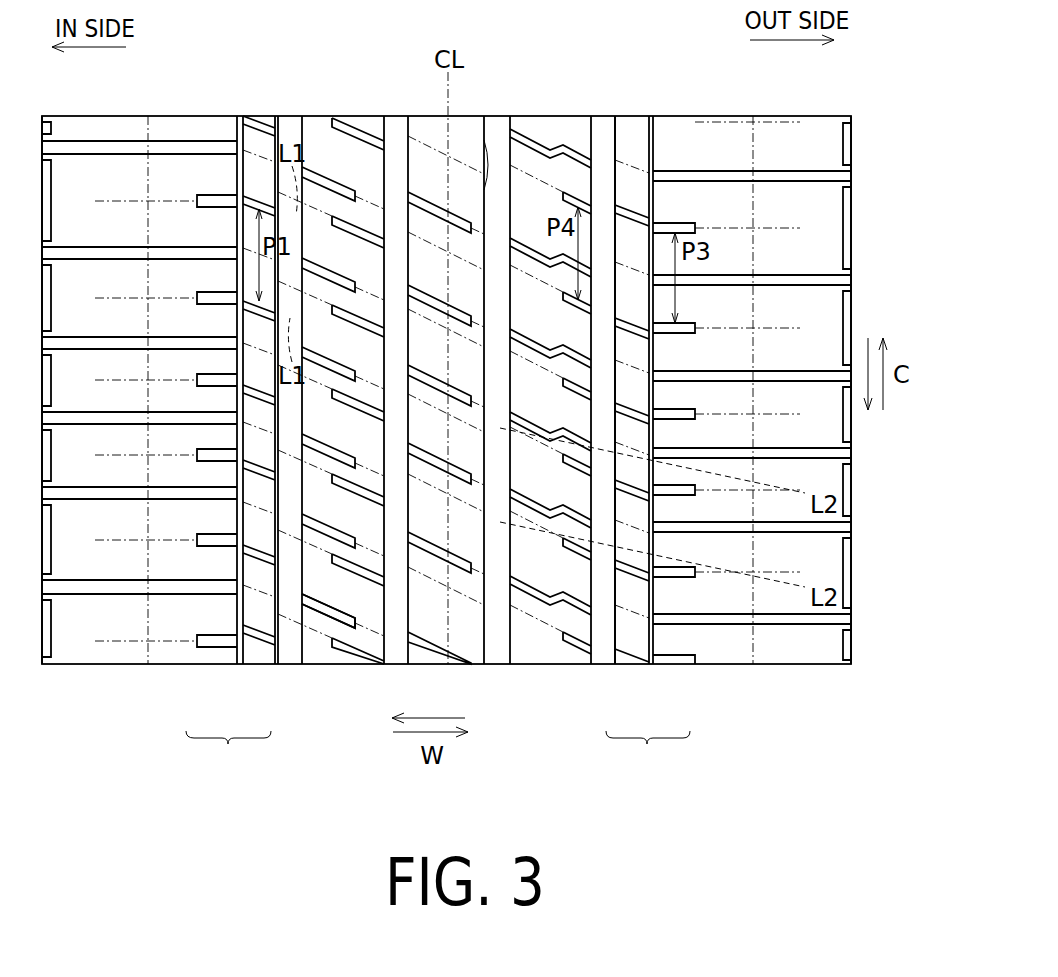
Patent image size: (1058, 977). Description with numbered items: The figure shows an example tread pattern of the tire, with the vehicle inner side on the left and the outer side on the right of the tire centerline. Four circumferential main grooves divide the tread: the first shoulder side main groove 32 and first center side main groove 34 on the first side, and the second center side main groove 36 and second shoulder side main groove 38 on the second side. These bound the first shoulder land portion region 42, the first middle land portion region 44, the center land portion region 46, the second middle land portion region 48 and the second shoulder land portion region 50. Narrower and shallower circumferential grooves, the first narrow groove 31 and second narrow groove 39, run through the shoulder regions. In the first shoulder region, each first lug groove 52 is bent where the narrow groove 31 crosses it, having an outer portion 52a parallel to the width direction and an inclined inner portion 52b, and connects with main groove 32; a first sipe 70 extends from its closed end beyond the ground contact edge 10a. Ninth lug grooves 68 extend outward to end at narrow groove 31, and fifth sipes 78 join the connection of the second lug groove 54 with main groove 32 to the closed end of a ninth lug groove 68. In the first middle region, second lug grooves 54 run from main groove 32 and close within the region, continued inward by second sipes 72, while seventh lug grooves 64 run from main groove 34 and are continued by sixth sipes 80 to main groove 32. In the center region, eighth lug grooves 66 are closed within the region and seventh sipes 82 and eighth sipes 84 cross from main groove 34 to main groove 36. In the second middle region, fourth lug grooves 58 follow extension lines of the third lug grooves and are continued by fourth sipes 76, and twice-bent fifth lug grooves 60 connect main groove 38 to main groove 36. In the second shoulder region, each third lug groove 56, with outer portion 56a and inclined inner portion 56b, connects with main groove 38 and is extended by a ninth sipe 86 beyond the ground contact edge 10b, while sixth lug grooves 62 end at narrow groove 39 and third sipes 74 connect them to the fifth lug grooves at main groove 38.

The ground contact edge 10a is at (148, 657).
The ground contact edge 10b is at (752, 662).
The first sipe 70 is at (118, 200).
The first shoulder land portion region 42 is at (195, 140).
The ninth lug groove 68 is at (81, 593).
The sixth lug groove 62 is at (810, 628).
The outer portion 52a is at (208, 648).
The inner portion 52b is at (254, 650).
The first lug groove 52 is at (228, 749).
The first narrow groove 31 is at (240, 664).
The first shoulder side main groove 32 is at (289, 664).
The fifth sipe 78 is at (262, 150).
The first middle land portion region 44 is at (318, 125).
The second lug groove 54 is at (324, 600).
The sixth sipe 80 is at (338, 122).
The second sipe 72 is at (373, 190).
The seventh lug groove 64 is at (363, 592).
The first center side main groove 34 is at (397, 664).
The center land portion region 46 is at (465, 132).
The eighth lug groove 66 is at (431, 640).
The seventh sipe 82 is at (435, 132).
The eighth sipe 84 is at (483, 165).
The second center side main groove 36 is at (497, 664).
The second middle land portion region 48 is at (577, 133).
The fourth sipe 76 is at (532, 190).
The fourth lug groove 58 is at (577, 664).
The fifth lug groove 60 is at (529, 645).
The second shoulder side main groove 38 is at (603, 664).
The third sipe 74 is at (637, 163).
The inner portion 56b is at (632, 667).
The outer portion 56a is at (678, 667).
The third lug groove 56 is at (648, 749).
The second narrow groove 39 is at (651, 664).
The second shoulder land portion region 50 is at (709, 132).
The ninth sipe 86 is at (790, 227).